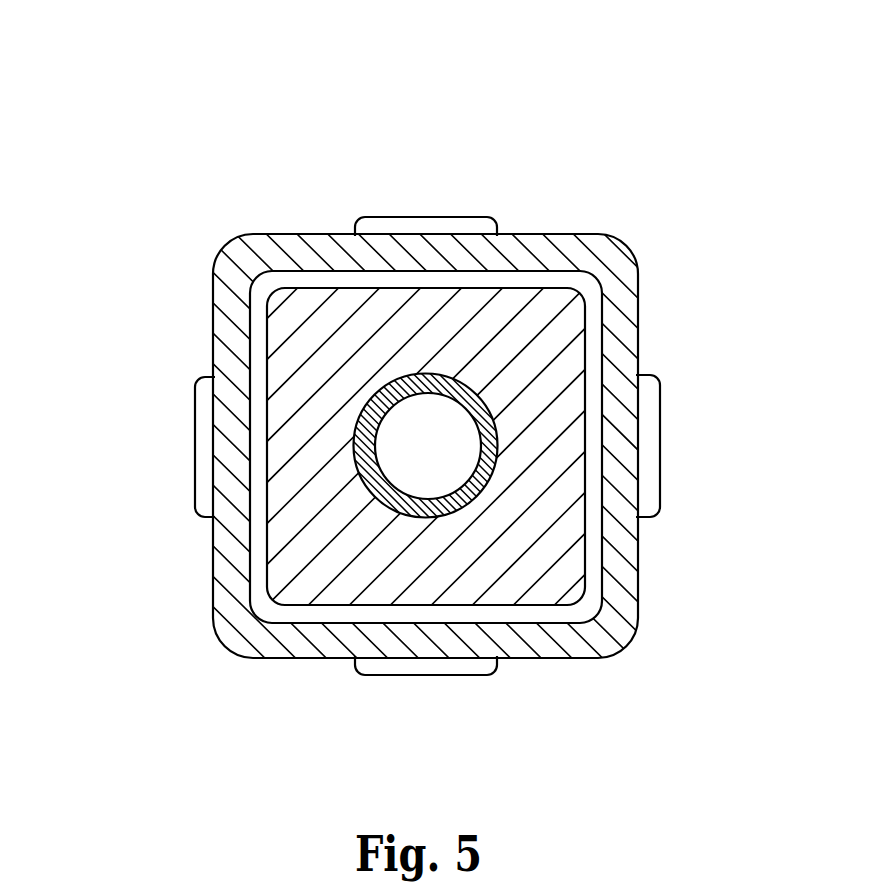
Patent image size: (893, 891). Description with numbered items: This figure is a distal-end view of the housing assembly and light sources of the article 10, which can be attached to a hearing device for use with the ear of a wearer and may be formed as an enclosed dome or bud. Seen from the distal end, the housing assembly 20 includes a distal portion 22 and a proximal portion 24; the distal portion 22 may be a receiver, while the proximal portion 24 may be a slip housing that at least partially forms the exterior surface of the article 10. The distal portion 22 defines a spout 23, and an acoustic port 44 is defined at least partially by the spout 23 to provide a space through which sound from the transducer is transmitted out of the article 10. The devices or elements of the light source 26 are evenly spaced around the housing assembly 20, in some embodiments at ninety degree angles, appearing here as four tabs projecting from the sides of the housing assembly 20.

The article 10 is at (164, 70).
The housing assembly 20 is at (217, 236).
The distal portion 22 is at (553, 342).
The spout 23 is at (490, 452).
The proximal portion 24 is at (615, 242).
The light source 26 is at (428, 217).
The acoustic port 44 is at (394, 484).